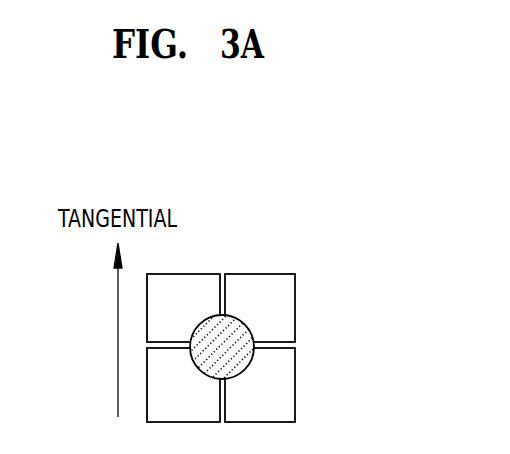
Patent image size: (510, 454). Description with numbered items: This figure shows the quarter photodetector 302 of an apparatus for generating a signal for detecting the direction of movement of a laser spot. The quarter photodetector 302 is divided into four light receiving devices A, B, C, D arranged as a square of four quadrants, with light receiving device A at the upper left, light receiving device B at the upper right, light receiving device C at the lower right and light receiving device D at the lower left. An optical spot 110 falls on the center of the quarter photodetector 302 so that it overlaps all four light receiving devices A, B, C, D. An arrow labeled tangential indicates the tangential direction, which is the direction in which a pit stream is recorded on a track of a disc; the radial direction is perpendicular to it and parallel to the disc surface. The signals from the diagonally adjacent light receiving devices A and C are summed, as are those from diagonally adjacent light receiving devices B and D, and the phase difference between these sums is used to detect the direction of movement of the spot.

The quarter photodetector 302 is at (307, 332).
The optical spot 110 is at (256, 350).
The light receiving device A is at (183, 308).
The light receiving device B is at (260, 308).
The light receiving device C is at (260, 385).
The light receiving device D is at (183, 385).